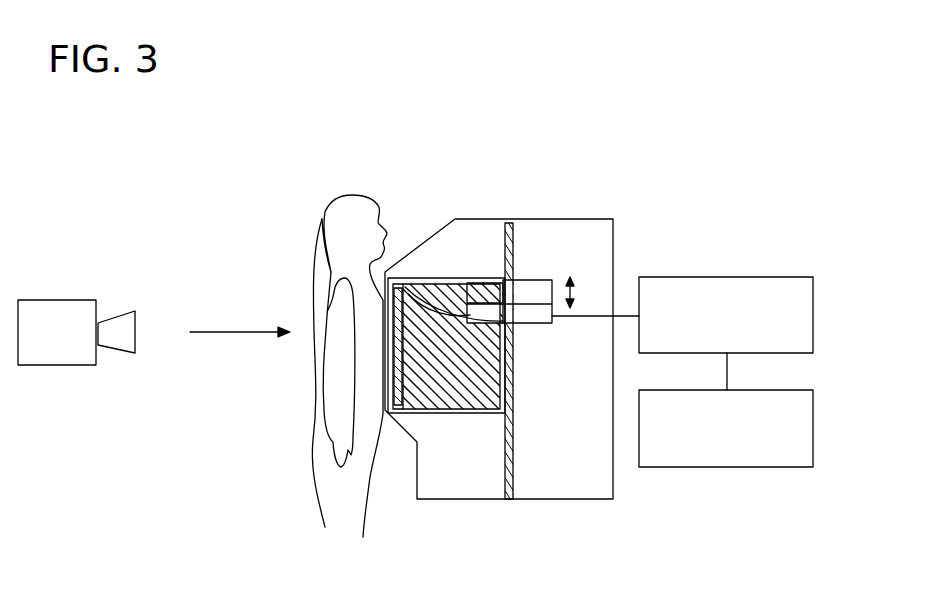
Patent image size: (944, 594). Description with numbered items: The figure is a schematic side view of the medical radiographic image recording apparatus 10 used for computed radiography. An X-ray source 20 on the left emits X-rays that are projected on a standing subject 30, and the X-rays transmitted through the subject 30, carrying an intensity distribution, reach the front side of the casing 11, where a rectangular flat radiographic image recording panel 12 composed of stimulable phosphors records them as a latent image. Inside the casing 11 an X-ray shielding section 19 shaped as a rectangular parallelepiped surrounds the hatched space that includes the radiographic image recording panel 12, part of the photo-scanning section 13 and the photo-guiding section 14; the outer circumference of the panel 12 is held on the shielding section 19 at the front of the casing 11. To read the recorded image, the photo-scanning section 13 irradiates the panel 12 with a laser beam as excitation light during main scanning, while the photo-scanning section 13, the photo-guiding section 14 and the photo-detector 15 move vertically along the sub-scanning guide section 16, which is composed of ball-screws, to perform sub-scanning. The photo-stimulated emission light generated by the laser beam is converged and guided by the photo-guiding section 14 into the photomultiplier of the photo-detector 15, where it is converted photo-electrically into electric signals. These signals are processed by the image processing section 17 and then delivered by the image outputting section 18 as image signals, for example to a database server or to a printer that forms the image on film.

The medical radiographic image recording apparatus 10 is at (448, 334).
The casing 11 is at (432, 500).
The radiographic image recording panel 12 is at (396, 408).
The photo-scanning section 13 is at (538, 279).
The photo-guiding section 14 is at (510, 330).
The photo-detector 15 is at (545, 325).
The sub-scanning guide section 16 is at (508, 220).
The image processing section 17 is at (682, 277).
The image outputting section 18 is at (688, 468).
The X-ray shielding section 19 is at (483, 415).
The X-ray source 20 is at (57, 300).
The subject 30 is at (320, 219).